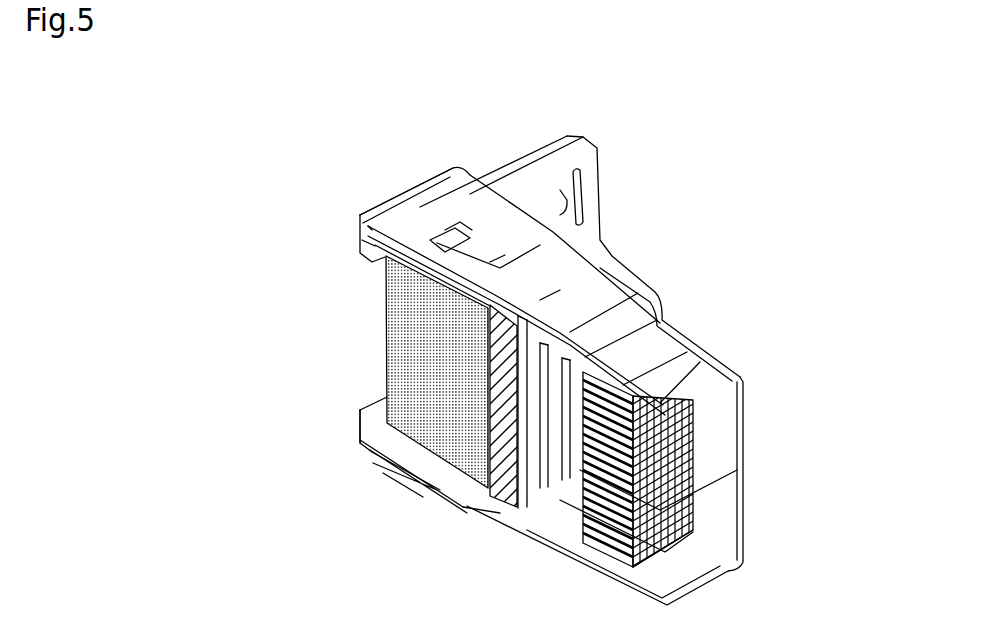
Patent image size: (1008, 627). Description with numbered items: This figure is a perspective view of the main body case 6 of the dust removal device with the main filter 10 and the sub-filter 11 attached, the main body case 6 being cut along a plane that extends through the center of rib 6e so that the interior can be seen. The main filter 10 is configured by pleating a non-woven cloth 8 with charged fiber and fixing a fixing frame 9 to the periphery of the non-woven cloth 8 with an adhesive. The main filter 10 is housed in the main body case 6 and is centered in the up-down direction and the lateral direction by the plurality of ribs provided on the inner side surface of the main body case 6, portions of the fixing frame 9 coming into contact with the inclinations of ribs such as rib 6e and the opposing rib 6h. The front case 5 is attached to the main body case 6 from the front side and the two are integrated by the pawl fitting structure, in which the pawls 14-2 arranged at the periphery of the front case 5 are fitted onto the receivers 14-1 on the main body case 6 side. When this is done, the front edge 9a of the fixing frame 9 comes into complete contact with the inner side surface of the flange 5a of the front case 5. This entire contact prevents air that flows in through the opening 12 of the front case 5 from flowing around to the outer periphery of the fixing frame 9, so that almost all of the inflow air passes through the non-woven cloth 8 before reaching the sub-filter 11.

The front case 5 is at (433, 175).
The flange 5a is at (357, 228).
The main body case 6 is at (620, 270).
The rib 6e is at (500, 513).
The rib 6h is at (548, 292).
The non-woven cloth 8 is at (387, 332).
The fixing frame 9 is at (387, 275).
The front edge 9a is at (357, 247).
The main filter 10 is at (267, 273).
The sub-filter 11 is at (687, 493).
The opening 12 is at (368, 372).
The receivers 14-1 is at (457, 212).
The pawls 14-2 is at (500, 235).